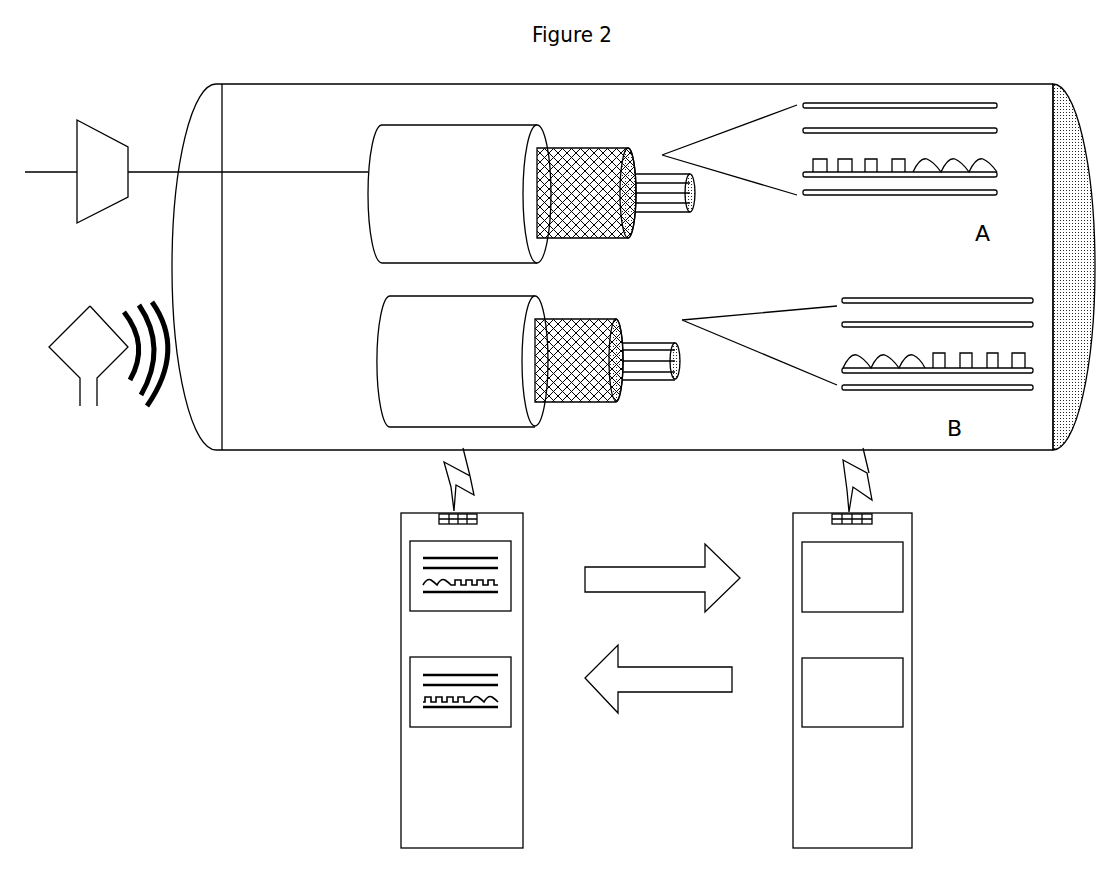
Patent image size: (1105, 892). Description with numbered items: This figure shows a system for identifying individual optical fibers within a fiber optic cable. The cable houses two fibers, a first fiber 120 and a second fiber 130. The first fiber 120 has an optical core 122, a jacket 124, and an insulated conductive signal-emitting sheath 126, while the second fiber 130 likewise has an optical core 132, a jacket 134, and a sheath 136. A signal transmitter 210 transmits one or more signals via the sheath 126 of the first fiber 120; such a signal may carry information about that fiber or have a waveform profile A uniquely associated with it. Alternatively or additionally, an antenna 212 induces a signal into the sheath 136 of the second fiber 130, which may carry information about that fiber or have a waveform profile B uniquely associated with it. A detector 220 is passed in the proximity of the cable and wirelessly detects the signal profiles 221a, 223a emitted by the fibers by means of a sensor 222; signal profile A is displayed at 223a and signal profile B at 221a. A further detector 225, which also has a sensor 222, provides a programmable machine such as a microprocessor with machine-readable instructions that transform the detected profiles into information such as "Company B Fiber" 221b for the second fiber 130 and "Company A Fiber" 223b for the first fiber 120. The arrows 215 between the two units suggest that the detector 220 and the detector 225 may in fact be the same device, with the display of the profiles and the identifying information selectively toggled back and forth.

The signal transmitter 210 is at (108, 146).
The antenna 212 is at (89, 390).
The fiber optic fiber 120 is at (509, 185).
The jacket 124 is at (503, 152).
The insulated conductive signal-emitting sheath 126 is at (572, 222).
The optical core 122 is at (683, 207).
The fiber optic fiber 130 is at (484, 349).
The jacket 134 is at (493, 320).
The insulated conductive signal-emitting sheath 136 is at (585, 403).
The optical core 132 is at (653, 377).
The sensor 222 is at (475, 512).
The signal profile 221a is at (420, 553).
The signal profile 223a is at (420, 667).
The Company B Fiber information 221b is at (893, 560).
The Company A Fiber information 223b is at (893, 672).
The arrows 215 is at (637, 680).
The detector 220 is at (437, 680).
The detector 225 is at (848, 680).